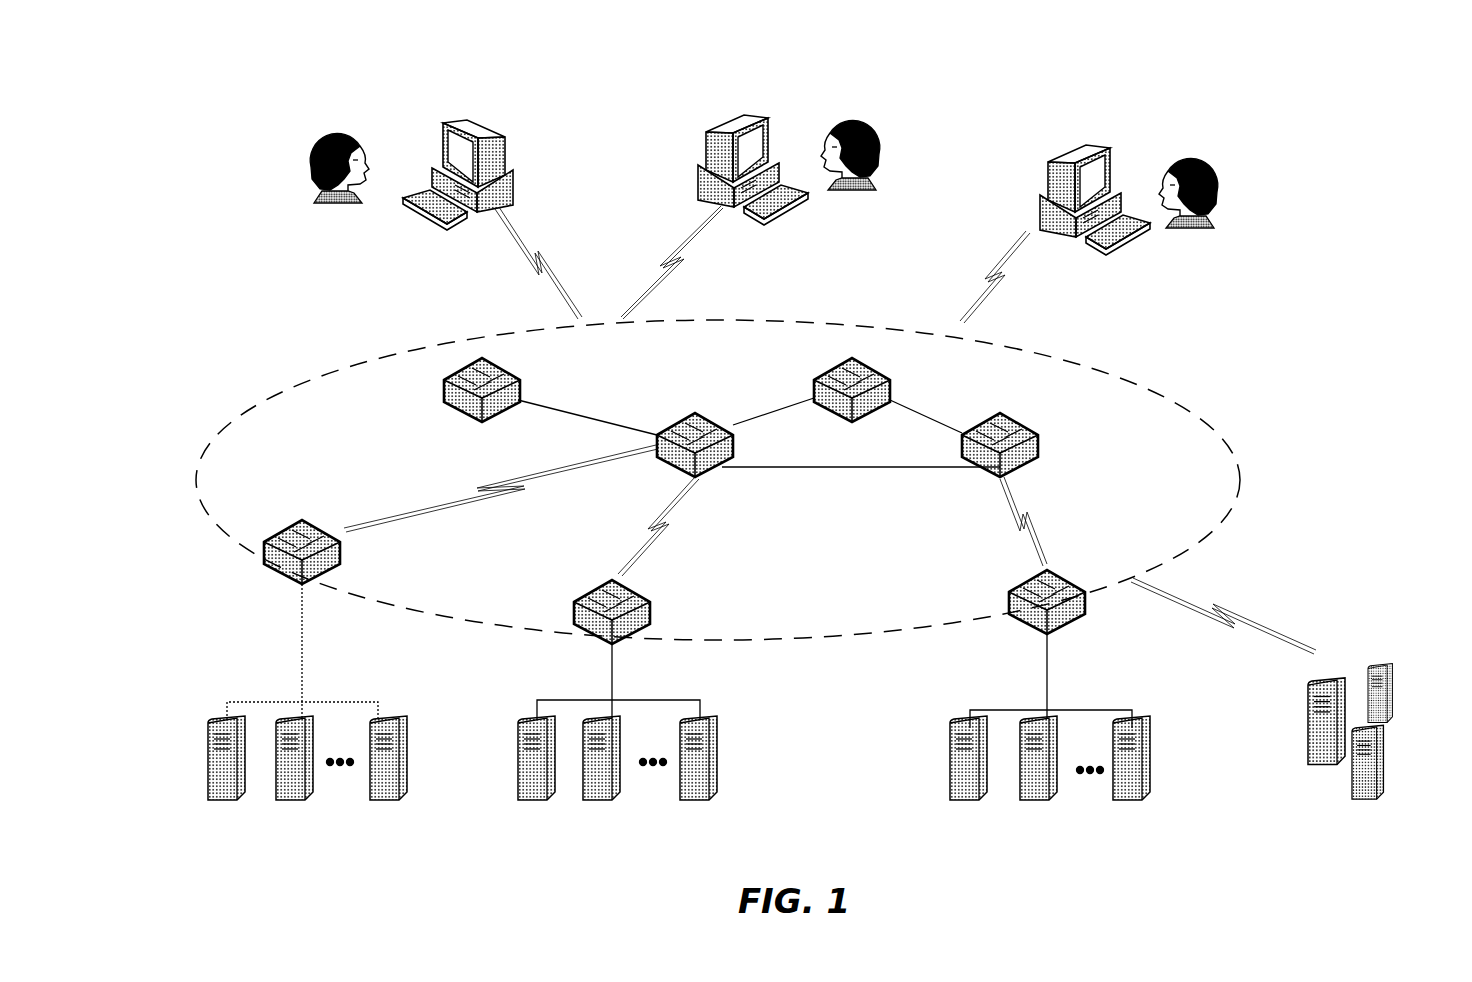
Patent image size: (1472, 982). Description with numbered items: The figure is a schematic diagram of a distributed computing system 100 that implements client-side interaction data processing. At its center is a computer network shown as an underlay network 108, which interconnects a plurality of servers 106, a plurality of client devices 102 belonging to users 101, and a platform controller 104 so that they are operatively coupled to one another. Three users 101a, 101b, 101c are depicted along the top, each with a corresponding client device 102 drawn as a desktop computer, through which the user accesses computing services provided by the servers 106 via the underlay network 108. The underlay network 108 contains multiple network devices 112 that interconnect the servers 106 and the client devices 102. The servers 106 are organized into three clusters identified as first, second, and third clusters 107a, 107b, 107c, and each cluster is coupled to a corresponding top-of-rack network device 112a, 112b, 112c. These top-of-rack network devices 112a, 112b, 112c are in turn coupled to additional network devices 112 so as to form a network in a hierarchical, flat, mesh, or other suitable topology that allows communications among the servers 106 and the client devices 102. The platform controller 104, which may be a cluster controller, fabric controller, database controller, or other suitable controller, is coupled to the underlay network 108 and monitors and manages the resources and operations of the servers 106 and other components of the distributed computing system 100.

The distributed computing system 100 is at (1345, 180).
The users 101 is at (156, 120).
The user 101a is at (289, 120).
The user 101b is at (897, 128).
The user 101c is at (1235, 163).
The client devices 102 is at (497, 125).
The platform controller 104 is at (1390, 668).
The servers 106 is at (208, 725).
The first cluster 107a is at (156, 660).
The second cluster 107b is at (509, 678).
The third cluster 107c is at (1106, 668).
The underlay network 108 is at (908, 560).
The network devices 112 is at (452, 379).
The top-of-rack network device 112a is at (276, 528).
The top-of-rack network device 112b is at (604, 588).
The top-of-rack network device 112c is at (1068, 580).